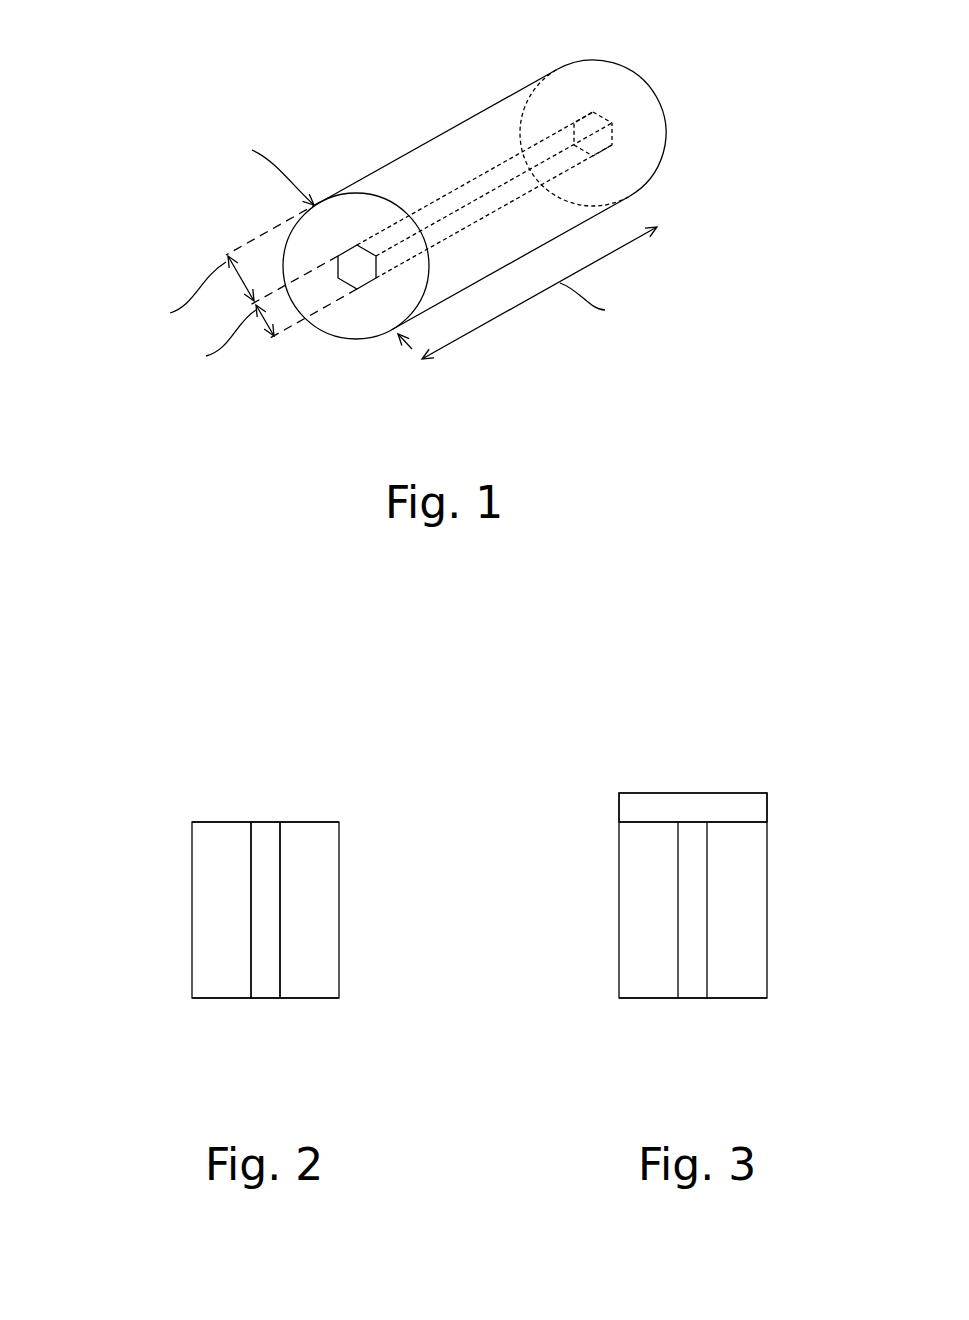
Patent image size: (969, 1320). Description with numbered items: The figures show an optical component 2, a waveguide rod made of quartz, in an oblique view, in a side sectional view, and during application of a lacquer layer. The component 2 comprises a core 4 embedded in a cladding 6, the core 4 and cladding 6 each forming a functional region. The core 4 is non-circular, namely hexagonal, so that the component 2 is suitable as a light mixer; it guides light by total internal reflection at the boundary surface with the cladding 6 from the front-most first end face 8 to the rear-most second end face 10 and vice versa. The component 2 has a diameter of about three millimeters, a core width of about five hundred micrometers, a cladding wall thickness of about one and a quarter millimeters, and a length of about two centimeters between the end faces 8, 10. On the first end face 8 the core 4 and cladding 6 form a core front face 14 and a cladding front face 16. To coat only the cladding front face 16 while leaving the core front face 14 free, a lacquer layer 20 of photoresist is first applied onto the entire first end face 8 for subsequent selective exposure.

In FIG. 1, the optical component 2 is at (316, 86).
In FIG. 2, the optical component 2 is at (90, 778).
In FIG. 1, the core 4 is at (547, 138).
In FIG. 2, the core 4 is at (280, 968).
In FIG. 3, the core 4 is at (707, 968).
In FIG. 1, the cladding 6 is at (462, 122).
In FIG. 2, the cladding 6 is at (339, 880).
In FIG. 3, the cladding 6 is at (767, 880).
In FIG. 1, the first end face 8 is at (370, 355).
In FIG. 2, the first end face 8 is at (316, 793).
In FIG. 3, the first end face 8 is at (752, 818).
In FIG. 1, the second end face 10 is at (660, 72).
In FIG. 2, the second end face 10 is at (318, 1028).
In FIG. 3, the second end face 10 is at (760, 1028).
In FIG. 1, the core front face 14 is at (357, 267).
In FIG. 2, the core front face 14 is at (266, 818).
In FIG. 1, the cladding front face 16 is at (356, 312).
In FIG. 2, the cladding front face 16 is at (221, 818).
In FIG. 3, the lacquer layer 20 is at (693, 807).